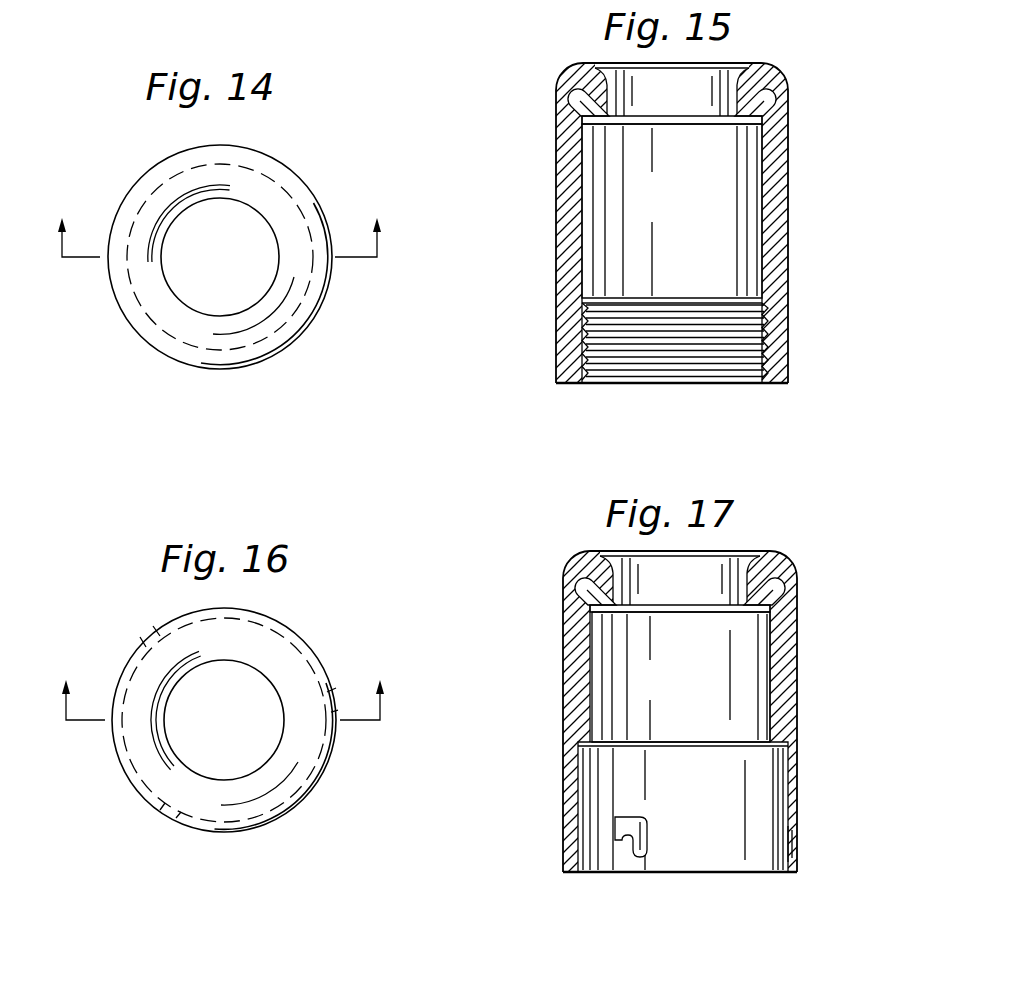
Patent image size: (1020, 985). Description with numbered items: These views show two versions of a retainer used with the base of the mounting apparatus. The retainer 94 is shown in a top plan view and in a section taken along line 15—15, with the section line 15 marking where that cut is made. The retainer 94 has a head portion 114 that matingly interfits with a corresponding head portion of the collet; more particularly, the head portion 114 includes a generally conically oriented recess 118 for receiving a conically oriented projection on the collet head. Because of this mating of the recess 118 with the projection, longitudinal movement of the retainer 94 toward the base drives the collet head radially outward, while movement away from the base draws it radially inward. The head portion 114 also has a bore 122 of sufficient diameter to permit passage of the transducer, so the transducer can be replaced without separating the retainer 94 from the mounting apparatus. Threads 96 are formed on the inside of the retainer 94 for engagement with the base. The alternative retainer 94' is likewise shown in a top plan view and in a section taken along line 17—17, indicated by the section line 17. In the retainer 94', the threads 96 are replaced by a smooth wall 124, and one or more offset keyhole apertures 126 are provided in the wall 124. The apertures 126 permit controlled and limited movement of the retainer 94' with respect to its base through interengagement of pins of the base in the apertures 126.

In FIG. 14, the section line 15— 15 is at (220, 222).
In FIG. 16, the section line 17— 17 is at (223, 686).
In FIG. 14, the retainer 94 is at (208, 287).
In FIG. 15, the retainer 94 is at (634, 261).
In FIG. 16, the retainer 94' is at (198, 751).
In FIG. 17, the retainer 94' is at (644, 761).
In FIG. 15, the threads 96 is at (598, 354).
In FIG. 15, the head portion 114 is at (600, 131).
In FIG. 15, the conically oriented recess 118 is at (577, 101).
In FIG. 14, the bore 122 is at (207, 290).
In FIG. 15, the bore 122 is at (645, 110).
In FIG. 17, the smooth wall 124 is at (578, 846).
In FIG. 16, the offset keyhole apertures 126 is at (337, 710).
In FIG. 17, the offset keyhole apertures 126 is at (647, 840).